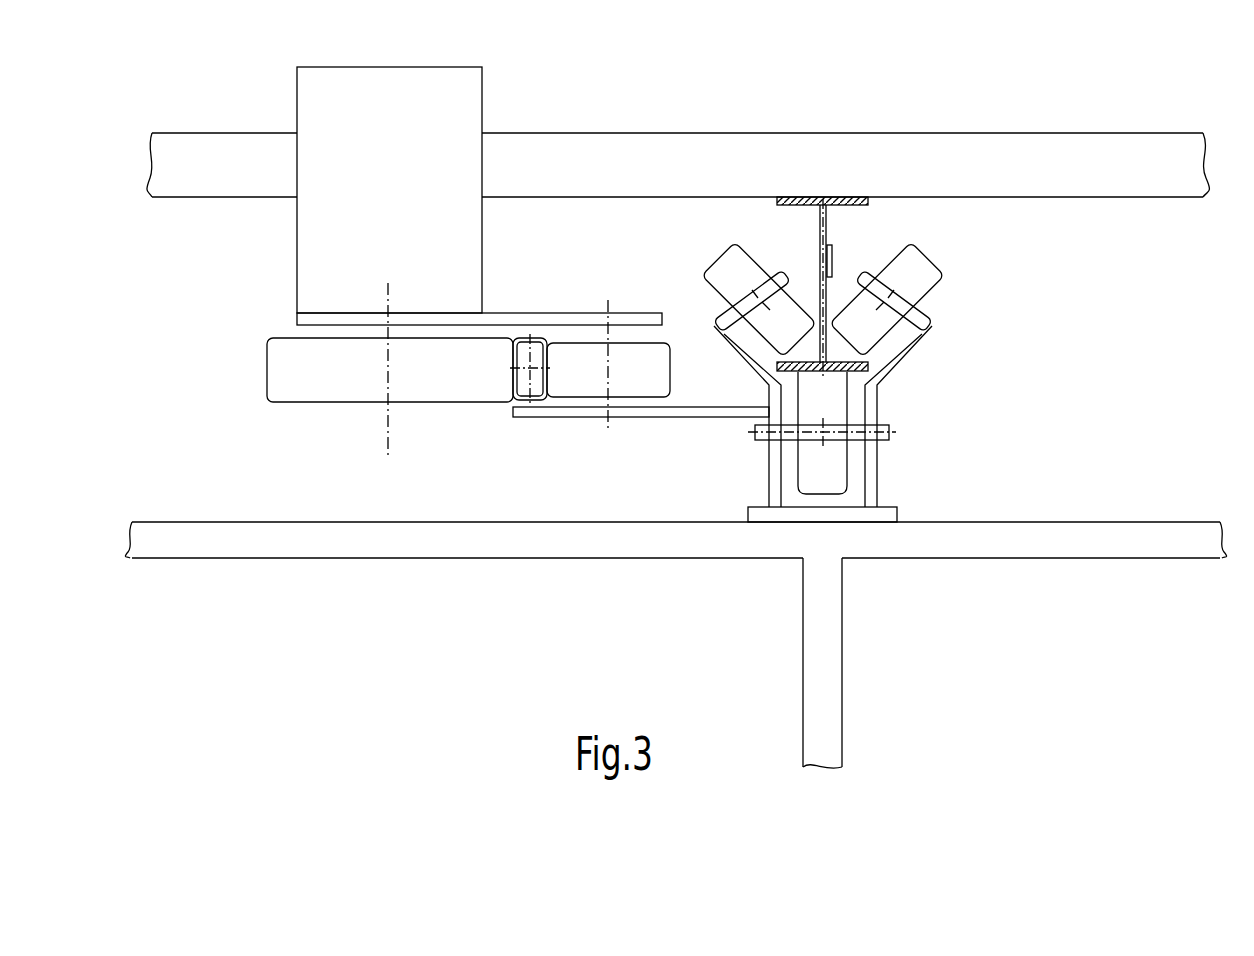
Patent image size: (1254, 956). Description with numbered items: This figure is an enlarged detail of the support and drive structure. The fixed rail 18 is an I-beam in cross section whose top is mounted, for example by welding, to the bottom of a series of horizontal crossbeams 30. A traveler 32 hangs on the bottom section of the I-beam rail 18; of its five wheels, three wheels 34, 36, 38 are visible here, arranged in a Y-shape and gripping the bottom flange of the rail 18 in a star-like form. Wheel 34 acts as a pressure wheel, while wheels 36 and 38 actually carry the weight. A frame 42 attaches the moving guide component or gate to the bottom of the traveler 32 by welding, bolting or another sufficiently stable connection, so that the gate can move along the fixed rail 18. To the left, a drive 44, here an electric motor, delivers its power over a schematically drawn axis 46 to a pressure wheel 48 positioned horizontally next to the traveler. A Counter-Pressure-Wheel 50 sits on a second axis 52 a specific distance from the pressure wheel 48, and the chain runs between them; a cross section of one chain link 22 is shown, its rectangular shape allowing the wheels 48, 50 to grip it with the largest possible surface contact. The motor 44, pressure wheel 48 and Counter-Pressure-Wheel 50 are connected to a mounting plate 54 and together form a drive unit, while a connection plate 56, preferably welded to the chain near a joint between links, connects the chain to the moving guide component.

The fixed rail 18 is at (828, 238).
The chain link 22 is at (524, 376).
The horizontal crossbeam 30 is at (1120, 145).
The traveler 32 is at (902, 365).
The wheel 34 is at (833, 473).
The wheel 36 is at (927, 273).
The wheel 38 is at (728, 267).
The frame 42 is at (970, 547).
The drive 44 is at (455, 82).
The axis 46 is at (388, 440).
The pressure wheel 48 is at (287, 382).
The Counter-Pressure-Wheel 50 is at (650, 383).
The axis 52 is at (608, 307).
The mounting plate 54 is at (297, 322).
The connection plate 56 is at (578, 418).